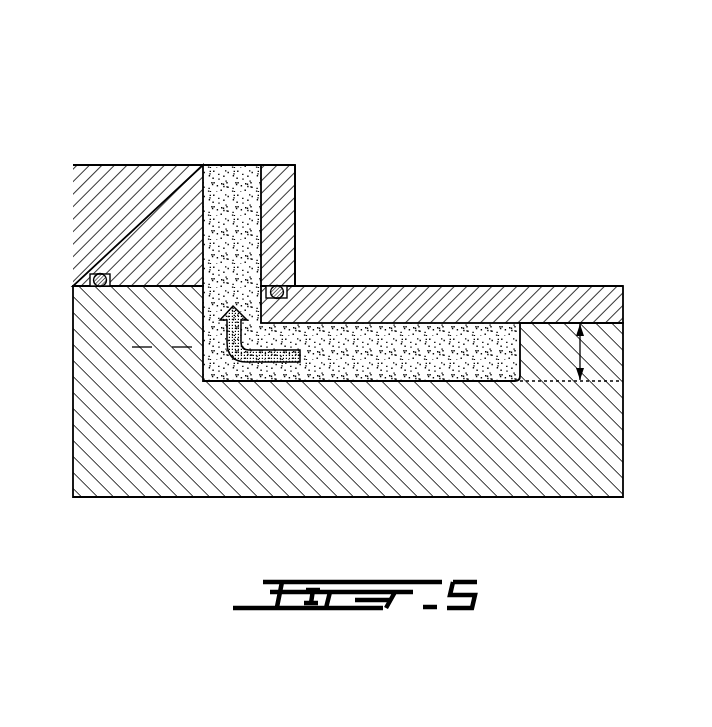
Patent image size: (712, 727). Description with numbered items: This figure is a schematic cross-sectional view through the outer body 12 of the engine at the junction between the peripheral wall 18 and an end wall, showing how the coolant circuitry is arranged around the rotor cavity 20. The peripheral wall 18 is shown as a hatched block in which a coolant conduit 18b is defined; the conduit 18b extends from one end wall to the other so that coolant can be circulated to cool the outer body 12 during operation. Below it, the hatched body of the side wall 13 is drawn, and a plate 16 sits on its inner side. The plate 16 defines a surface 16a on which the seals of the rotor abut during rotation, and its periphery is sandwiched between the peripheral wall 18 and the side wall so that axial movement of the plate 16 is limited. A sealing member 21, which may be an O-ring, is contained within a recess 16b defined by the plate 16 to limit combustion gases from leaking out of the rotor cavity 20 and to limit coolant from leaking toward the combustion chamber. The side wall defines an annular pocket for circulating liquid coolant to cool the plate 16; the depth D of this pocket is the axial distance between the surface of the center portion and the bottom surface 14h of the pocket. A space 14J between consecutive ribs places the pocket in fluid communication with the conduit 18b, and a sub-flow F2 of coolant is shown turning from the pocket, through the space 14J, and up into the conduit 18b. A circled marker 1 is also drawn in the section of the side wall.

The outer body 12 is at (489, 156).
The base body 13 is at (637, 287).
The space between ribs 14J is at (203, 308).
The bottom surface of the pocket 14h is at (386, 381).
The plate 16 is at (572, 287).
The surface of the plate 16a is at (358, 286).
The recess 16b is at (284, 287).
The sealing member 21 is at (342, 253).
The peripheral wall 18 is at (124, 165).
The coolant conduit 18b is at (296, 190).
The rotor cavity 20 is at (470, 220).
The detail marker 1 is at (162, 347).
The sub-flow F2 is at (242, 356).
The depth of the pocket D is at (583, 352).